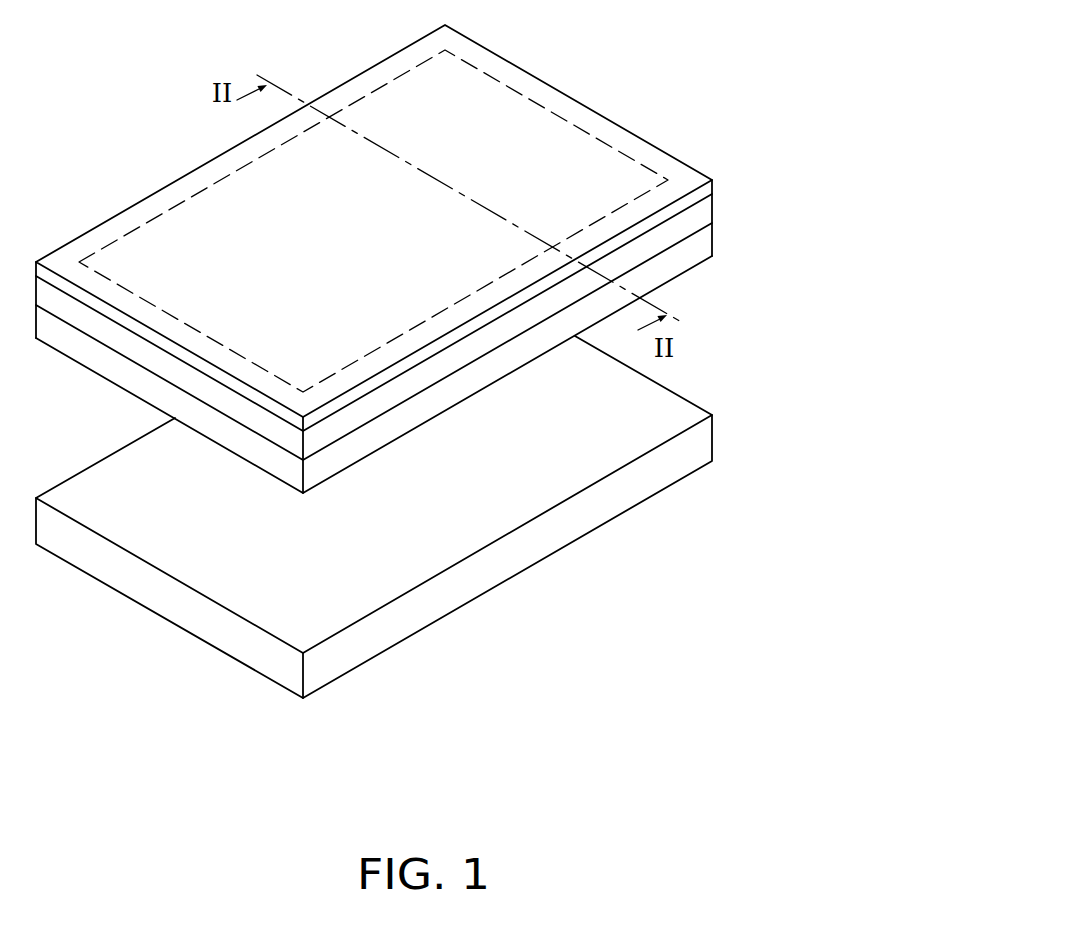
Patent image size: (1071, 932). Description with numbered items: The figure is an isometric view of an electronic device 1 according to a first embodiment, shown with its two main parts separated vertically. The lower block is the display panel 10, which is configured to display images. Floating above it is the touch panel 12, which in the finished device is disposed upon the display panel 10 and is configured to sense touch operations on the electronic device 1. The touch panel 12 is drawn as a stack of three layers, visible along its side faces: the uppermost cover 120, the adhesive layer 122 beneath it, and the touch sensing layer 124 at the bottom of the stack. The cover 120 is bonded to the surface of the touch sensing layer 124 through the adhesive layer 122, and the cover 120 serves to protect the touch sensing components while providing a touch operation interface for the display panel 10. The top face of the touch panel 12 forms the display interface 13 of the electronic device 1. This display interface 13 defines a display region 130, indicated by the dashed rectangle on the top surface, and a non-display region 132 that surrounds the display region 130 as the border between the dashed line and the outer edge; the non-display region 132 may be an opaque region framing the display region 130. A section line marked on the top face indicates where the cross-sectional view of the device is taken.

The electronic device 1 is at (138, 131).
The display panel 10 is at (582, 522).
The touch panel 12 is at (437, 330).
The cover 120 is at (707, 190).
The adhesive layer 122 is at (697, 220).
The touch sensing layer 124 is at (412, 364).
The display interface 13 is at (413, 221).
The display region 130 is at (377, 221).
The non-display region 132 is at (652, 208).